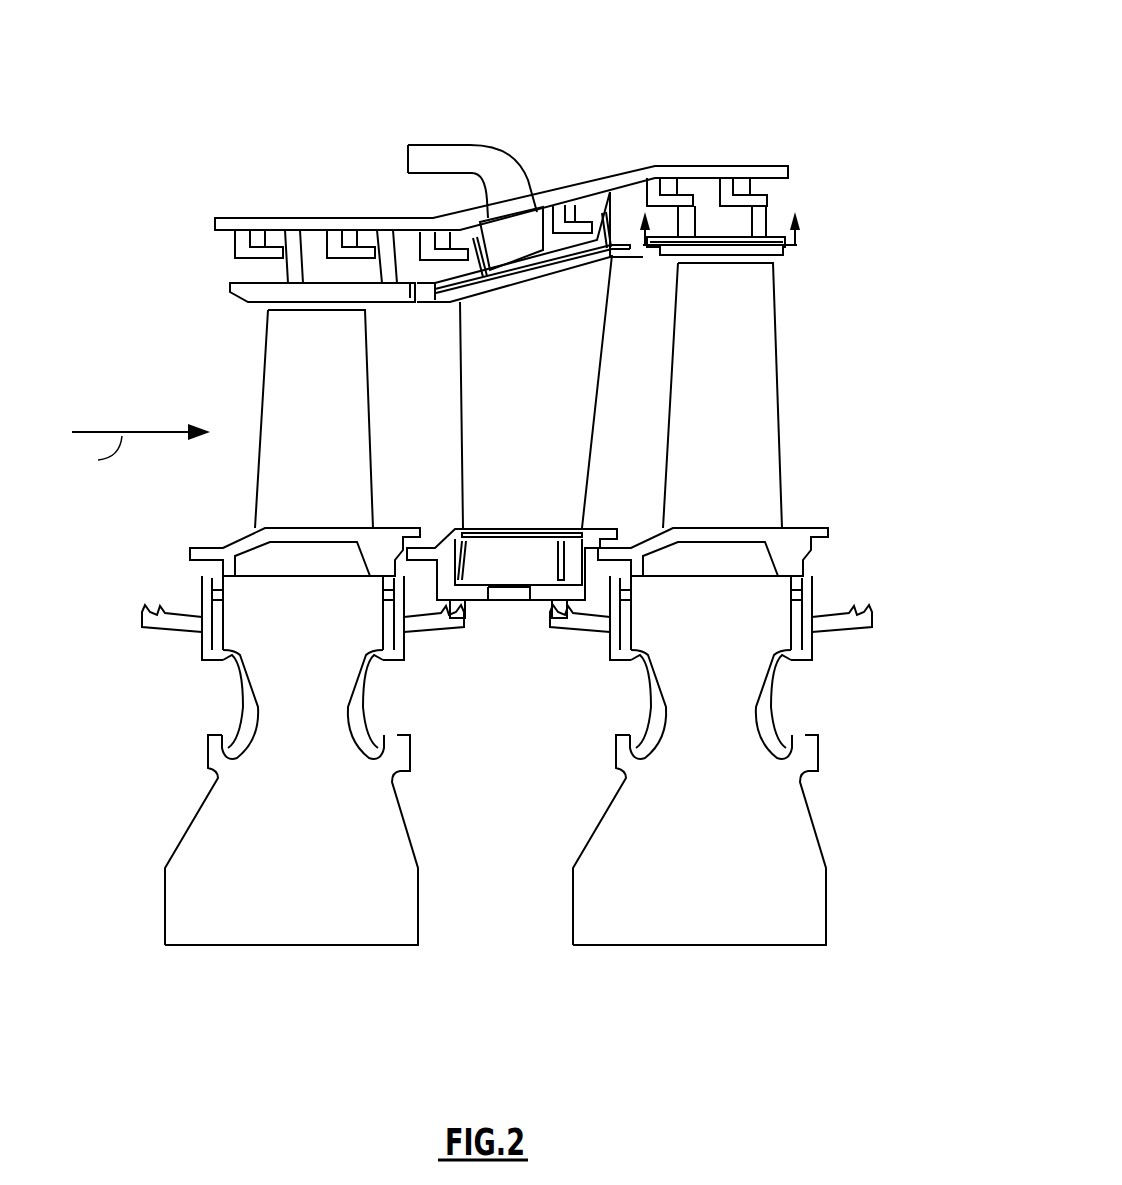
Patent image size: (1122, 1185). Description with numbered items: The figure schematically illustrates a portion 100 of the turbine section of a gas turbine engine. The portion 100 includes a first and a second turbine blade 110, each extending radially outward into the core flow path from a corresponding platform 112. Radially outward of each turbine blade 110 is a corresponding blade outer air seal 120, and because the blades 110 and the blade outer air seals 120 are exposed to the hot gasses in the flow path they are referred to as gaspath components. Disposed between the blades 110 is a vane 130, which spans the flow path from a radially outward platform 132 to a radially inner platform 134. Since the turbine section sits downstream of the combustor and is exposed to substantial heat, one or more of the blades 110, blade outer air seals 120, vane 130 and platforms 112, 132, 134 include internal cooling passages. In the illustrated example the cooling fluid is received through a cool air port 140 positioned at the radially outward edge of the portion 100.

The portion of the turbine section 100 is at (703, 62).
The turbine blade 110 is at (292, 390).
The platform 112 is at (306, 540).
The blade outer air seal (BOAS) 120 is at (240, 288).
The vane 130 is at (468, 332).
The radially outward platform 132 is at (543, 225).
The radially inner platform 134 is at (500, 545).
The cool air port 140 is at (441, 150).